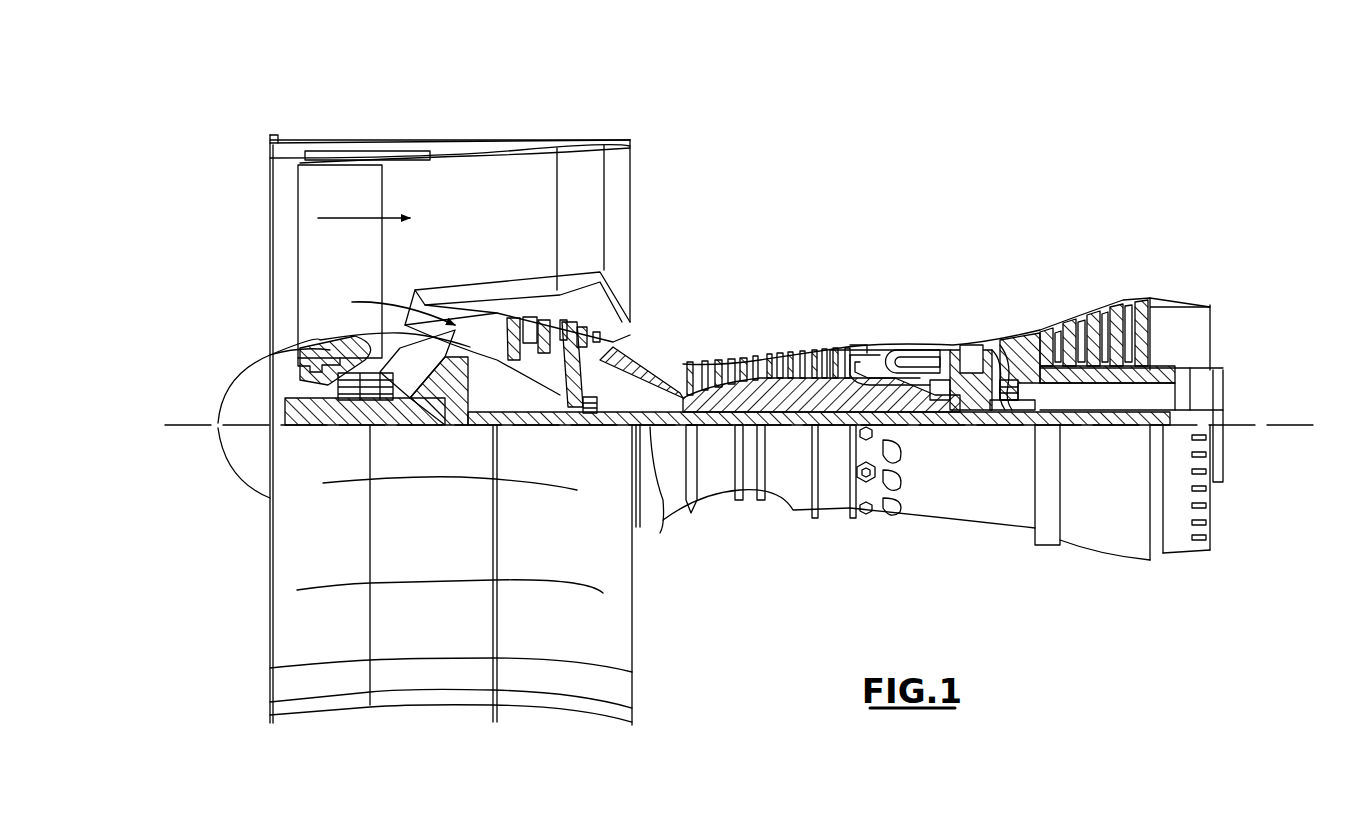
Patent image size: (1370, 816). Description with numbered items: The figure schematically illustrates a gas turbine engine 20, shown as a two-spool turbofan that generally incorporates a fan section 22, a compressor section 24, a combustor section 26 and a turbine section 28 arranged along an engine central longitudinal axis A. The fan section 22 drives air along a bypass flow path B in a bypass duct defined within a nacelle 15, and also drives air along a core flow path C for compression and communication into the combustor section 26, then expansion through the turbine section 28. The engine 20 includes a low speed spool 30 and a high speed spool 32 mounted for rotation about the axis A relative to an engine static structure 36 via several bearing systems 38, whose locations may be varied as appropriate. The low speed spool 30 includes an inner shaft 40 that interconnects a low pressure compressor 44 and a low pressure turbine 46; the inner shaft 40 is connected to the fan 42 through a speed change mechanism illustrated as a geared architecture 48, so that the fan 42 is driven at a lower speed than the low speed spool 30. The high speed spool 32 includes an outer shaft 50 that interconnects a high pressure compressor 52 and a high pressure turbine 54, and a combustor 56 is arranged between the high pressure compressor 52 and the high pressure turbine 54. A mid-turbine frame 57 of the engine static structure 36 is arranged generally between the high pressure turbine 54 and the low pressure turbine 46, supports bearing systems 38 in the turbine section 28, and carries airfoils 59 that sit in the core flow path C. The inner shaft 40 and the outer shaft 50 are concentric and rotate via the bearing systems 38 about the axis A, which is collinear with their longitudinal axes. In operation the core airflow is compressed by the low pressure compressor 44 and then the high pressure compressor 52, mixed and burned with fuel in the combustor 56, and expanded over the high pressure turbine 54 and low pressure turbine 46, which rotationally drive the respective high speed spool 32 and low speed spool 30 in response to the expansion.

The gas turbine engine 20 is at (912, 190).
The fan section 22 is at (378, 130).
The nacelle 15 is at (452, 150).
The fan 42 is at (354, 271).
The compressor section 24 is at (683, 330).
The combustor section 26 is at (903, 325).
The turbine section 28 is at (1052, 286).
The low speed spool 30 is at (790, 432).
The high speed spool 32 is at (835, 385).
The engine static structure 36 is at (831, 518).
The bearing systems 38 is at (595, 408).
The inner shaft 40 is at (660, 533).
The low pressure compressor 44 is at (560, 327).
The low pressure turbine 46 is at (1098, 320).
The geared architecture 48 is at (452, 400).
The outer shaft 50 is at (912, 414).
The high pressure compressor 52 is at (767, 390).
The high pressure turbine 54 is at (970, 342).
The combustor 56 is at (907, 367).
The mid-turbine frame 57 is at (1013, 332).
The airfoils 59 is at (1012, 360).
The engine central longitudinal axis A is at (1300, 425).
The bypass flow path B is at (353, 214).
The core flow path C is at (393, 305).